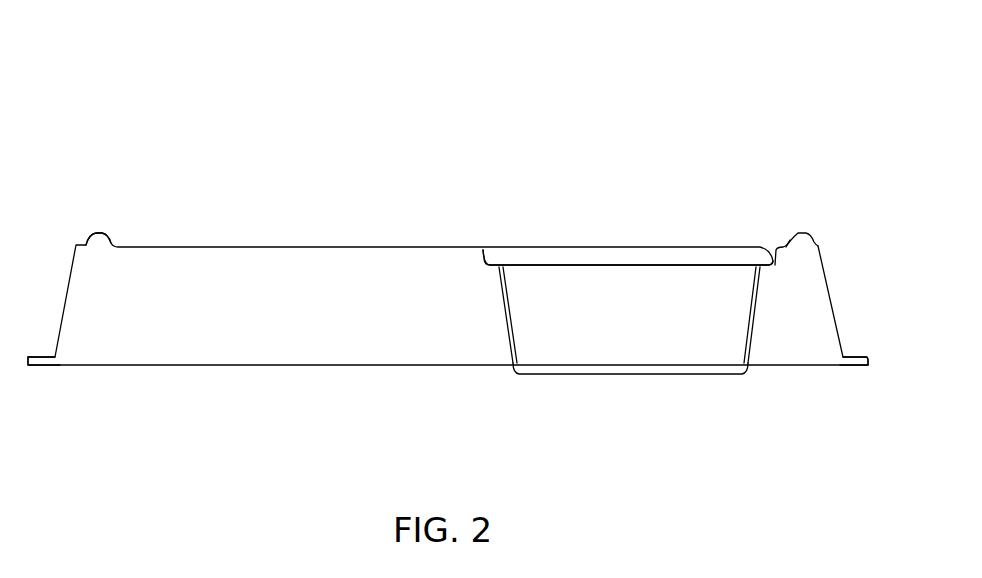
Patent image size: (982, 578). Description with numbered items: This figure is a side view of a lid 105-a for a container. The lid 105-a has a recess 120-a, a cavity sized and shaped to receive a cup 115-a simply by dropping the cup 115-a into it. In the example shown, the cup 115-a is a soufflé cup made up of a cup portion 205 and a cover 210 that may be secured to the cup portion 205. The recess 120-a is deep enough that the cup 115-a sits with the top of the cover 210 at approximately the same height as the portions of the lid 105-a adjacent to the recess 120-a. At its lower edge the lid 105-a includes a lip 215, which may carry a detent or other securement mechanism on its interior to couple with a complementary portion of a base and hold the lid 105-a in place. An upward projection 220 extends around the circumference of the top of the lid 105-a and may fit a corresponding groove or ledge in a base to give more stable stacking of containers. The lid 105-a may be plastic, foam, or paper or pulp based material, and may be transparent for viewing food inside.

The lid 105-a is at (184, 119).
The cup 115-a is at (499, 246).
The recess 120-a is at (763, 217).
The cup portion 205 is at (670, 366).
The cover 210 is at (760, 247).
The lip 215 is at (45, 366).
The upward projection 220 is at (98, 235).